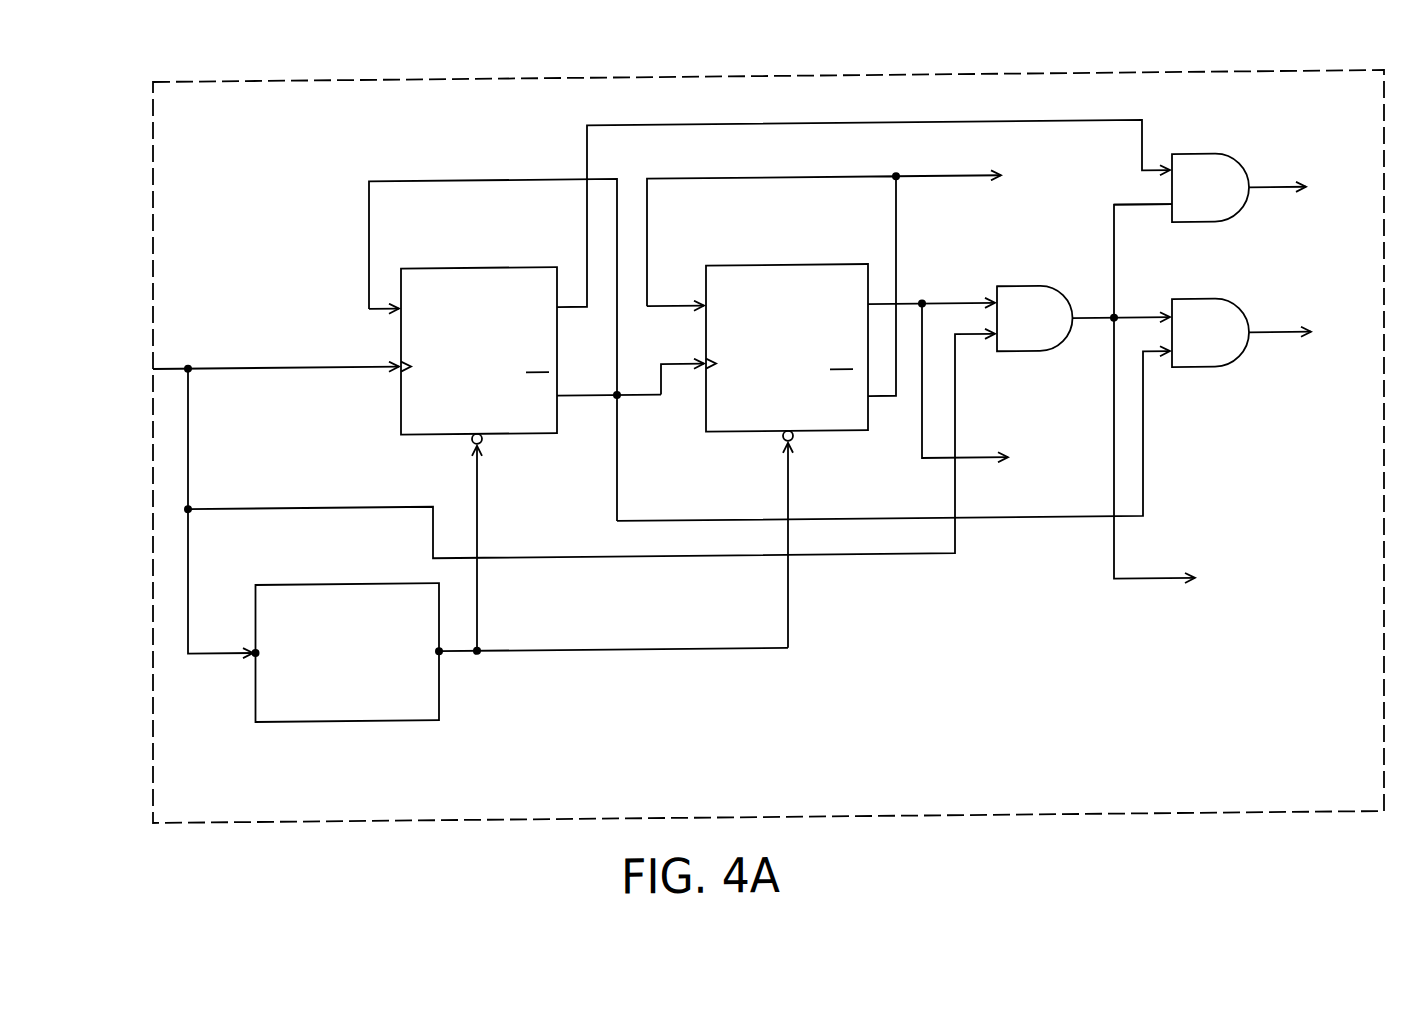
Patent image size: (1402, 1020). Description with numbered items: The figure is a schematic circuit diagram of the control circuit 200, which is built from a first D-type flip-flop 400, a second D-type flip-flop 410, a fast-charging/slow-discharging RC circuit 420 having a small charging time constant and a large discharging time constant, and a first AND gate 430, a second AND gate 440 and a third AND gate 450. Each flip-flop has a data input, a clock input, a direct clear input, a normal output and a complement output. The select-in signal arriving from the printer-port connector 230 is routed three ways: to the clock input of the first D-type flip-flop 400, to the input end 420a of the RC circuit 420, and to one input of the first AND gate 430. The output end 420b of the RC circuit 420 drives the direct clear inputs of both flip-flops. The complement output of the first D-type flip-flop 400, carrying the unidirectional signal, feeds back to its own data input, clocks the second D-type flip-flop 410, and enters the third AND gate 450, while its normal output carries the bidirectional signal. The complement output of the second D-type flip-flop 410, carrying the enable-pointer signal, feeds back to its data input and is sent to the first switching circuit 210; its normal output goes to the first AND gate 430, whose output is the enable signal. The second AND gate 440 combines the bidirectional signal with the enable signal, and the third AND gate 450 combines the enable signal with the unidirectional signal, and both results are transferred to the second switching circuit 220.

The control circuit 200 is at (693, 77).
The printer-port connector 230 is at (151, 369).
The first D-type flip-flop 400 is at (486, 270).
The second D-type flip-flop 410 is at (786, 270).
The first switching circuit 210 is at (977, 295).
The second switching circuit 220 is at (1285, 380).
The first AND gate 430 is at (1022, 292).
The second AND gate 440 is at (1193, 163).
The third AND gate 450 is at (1201, 308).
The fast-charging/slow-discharging RC circuit 420 is at (366, 725).
The input end of the fast-charging/slow-discharging RC circuit 420a is at (224, 535).
The output end of the fast-charging/slow-discharging RC circuit 420b is at (611, 572).